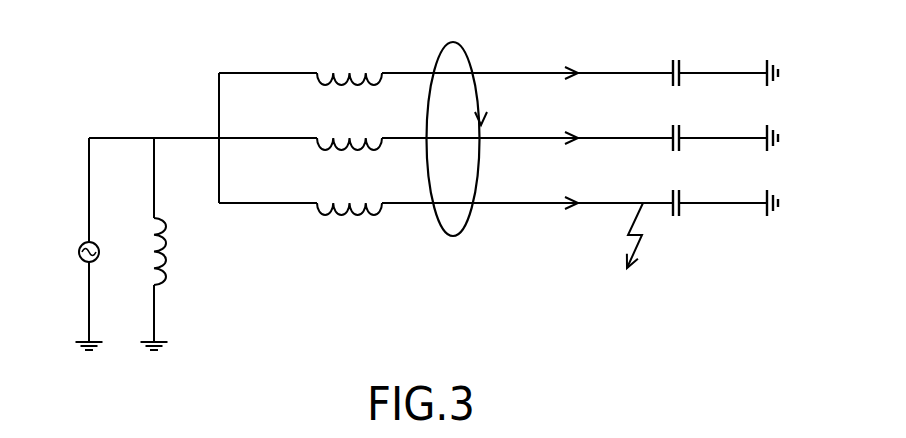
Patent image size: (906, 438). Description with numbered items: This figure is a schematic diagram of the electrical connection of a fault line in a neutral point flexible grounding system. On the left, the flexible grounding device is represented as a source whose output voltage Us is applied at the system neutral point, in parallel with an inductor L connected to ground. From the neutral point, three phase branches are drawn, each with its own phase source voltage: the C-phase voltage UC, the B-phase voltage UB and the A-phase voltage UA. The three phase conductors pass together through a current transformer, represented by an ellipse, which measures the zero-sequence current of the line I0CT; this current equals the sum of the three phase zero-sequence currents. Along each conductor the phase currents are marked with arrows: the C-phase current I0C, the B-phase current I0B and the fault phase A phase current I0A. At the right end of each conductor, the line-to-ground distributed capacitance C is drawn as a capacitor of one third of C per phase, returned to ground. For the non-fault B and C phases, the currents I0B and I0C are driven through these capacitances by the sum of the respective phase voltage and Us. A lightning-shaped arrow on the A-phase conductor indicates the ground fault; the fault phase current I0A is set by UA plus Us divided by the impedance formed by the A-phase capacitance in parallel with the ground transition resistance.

The output voltage of the flexible grounding device Us is at (75, 244).
The arc suppression coil (inductor) L is at (164, 244).
The C-phase voltage UC is at (349, 58).
The B-phase voltage UB is at (349, 128).
The A-phase voltage UA is at (349, 193).
The zero-sequence current of the line I0CT is at (481, 139).
The C-phase current I0C is at (586, 55).
The B-phase current I0B is at (586, 122).
The fault phase A phase current I0A is at (586, 188).
The distributed capacitance to ground C is at (718, 42).